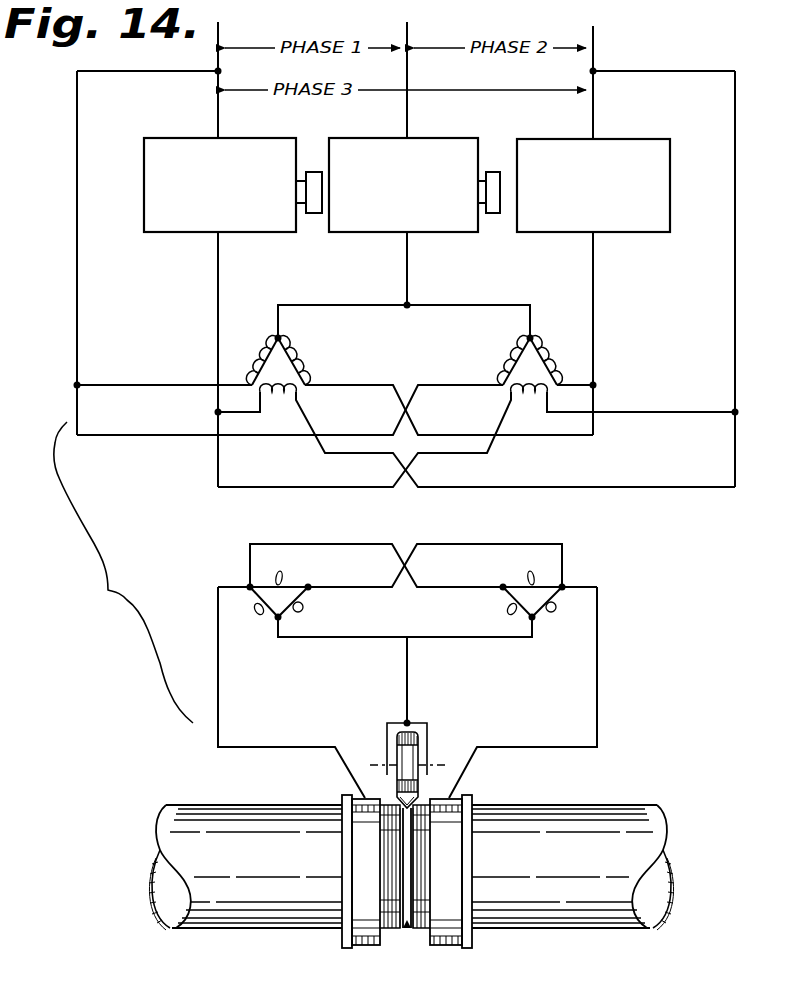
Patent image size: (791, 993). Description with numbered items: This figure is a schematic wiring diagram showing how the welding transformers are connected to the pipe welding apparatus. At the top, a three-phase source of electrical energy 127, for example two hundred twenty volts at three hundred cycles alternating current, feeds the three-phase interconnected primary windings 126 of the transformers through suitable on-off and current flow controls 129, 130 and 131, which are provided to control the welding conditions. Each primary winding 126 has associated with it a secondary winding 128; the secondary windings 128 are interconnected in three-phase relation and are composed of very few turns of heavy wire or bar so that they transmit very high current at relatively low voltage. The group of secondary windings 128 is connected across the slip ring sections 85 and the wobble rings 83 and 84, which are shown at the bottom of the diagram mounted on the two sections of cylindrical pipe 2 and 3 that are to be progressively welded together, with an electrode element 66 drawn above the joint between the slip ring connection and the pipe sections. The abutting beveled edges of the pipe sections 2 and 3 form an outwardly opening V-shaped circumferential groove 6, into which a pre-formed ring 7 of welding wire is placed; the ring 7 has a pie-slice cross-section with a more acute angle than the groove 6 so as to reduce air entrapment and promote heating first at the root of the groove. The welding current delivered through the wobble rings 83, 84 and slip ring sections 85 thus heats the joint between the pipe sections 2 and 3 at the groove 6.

The source of electrical energy 127 is at (221, 71).
The on-off and current flow control 129 is at (158, 233).
The on-off and current flow control 130 is at (345, 233).
The on-off and current flow control 131 is at (528, 233).
The primary windings 126 is at (304, 378).
The secondary winding 128 is at (287, 594).
The slip ring sections 85 is at (409, 721).
The electrode 66 is at (407, 757).
The wobble ring 84 is at (365, 799).
The wobble ring 83 is at (449, 799).
The V-shaped circumferential groove 6 is at (409, 870).
The ring of welding wire 7 is at (406, 930).
The section of cylindrical pipe 3 is at (243, 915).
The section of cylindrical pipe 2 is at (577, 925).